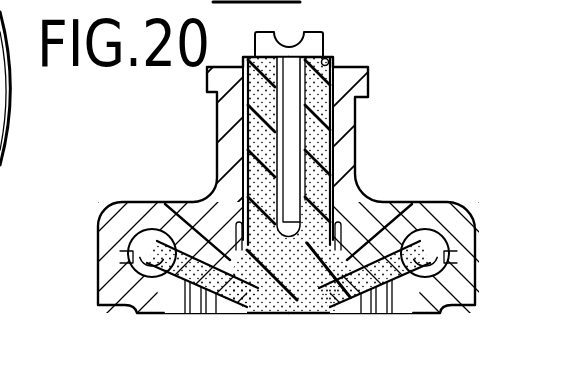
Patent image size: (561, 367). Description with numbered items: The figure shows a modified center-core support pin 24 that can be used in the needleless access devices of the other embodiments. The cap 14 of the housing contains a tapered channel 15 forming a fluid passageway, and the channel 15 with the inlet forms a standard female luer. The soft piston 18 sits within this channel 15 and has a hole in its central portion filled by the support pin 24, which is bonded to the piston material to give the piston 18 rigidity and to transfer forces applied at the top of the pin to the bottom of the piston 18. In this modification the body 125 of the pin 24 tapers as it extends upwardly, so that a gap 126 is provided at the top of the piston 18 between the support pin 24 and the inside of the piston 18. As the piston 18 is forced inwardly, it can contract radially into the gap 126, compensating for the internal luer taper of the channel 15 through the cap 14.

The cap 14 is at (412, 216).
The channel 15 is at (220, 97).
The piston 18 is at (265, 128).
The support pin 24 is at (336, 35).
The body of the pin 125 is at (290, 132).
The gap 126 is at (330, 61).